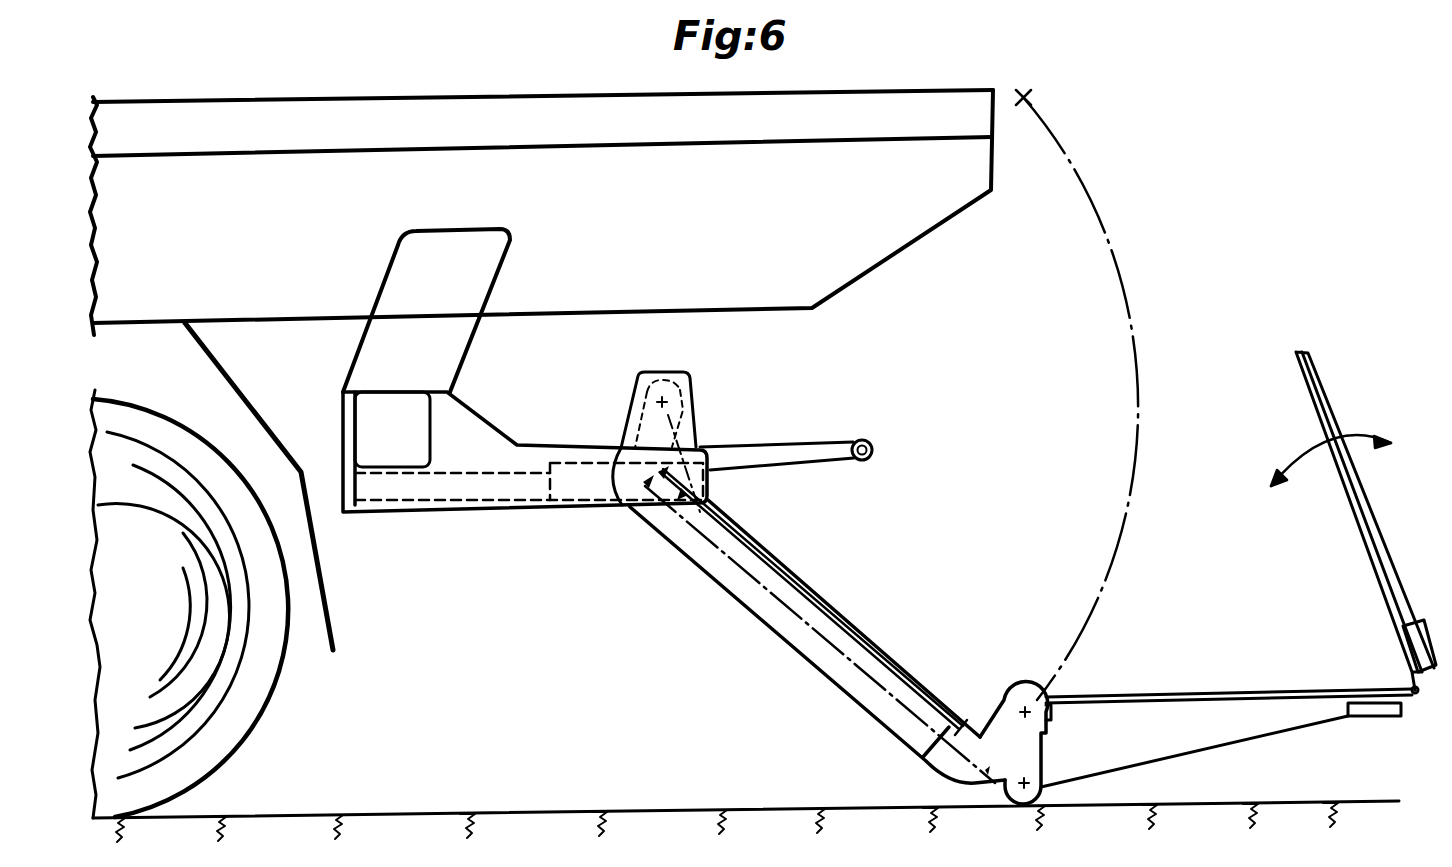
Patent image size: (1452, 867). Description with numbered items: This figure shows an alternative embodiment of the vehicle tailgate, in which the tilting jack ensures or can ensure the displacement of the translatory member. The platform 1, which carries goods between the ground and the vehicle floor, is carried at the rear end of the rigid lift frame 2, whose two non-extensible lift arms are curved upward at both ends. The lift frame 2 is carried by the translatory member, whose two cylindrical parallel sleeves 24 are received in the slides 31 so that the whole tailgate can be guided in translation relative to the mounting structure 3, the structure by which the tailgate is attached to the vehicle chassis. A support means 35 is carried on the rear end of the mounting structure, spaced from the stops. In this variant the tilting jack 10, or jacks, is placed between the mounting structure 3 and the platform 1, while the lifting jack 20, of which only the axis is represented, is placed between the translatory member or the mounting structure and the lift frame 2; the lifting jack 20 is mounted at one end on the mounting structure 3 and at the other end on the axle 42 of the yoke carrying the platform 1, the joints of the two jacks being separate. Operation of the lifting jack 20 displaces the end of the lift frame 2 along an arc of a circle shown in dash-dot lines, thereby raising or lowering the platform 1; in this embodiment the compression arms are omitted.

The platform 1 is at (1158, 690).
The lift frame 2 is at (857, 618).
The mounting structure 3 is at (482, 511).
The tilting jack 10 is at (913, 667).
The lifting jack 20 is at (895, 692).
The sleeves 24 is at (570, 503).
The slides 31 is at (433, 503).
The support means 35 is at (873, 448).
The axle 42 is at (977, 773).